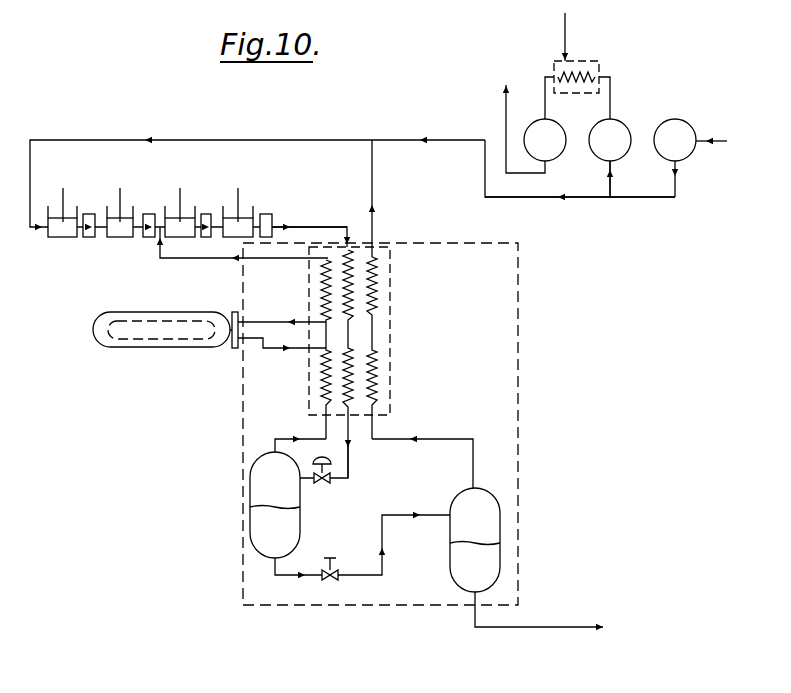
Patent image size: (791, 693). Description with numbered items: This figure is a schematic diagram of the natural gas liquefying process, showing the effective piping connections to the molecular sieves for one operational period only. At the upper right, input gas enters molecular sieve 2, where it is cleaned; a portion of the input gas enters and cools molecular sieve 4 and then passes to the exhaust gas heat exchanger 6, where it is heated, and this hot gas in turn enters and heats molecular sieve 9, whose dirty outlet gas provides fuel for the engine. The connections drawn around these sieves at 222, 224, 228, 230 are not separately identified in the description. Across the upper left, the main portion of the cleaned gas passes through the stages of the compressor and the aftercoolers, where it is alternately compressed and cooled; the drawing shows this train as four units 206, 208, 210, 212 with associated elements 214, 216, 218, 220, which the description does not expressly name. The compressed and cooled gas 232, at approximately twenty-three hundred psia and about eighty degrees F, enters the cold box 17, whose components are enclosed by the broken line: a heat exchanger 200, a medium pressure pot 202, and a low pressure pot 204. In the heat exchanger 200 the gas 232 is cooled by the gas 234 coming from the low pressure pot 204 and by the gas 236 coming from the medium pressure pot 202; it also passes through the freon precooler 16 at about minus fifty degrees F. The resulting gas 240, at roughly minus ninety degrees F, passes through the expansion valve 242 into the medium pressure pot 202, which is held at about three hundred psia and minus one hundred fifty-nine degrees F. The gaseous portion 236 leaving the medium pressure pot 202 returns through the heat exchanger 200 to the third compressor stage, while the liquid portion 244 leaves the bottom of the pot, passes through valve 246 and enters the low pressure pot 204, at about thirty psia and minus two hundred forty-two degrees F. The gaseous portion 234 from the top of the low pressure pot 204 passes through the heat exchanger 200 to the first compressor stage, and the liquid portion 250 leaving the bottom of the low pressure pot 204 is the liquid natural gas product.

The molecular sieve 2 is at (667, 130).
The molecular sieve 4 is at (617, 127).
The exhaust gas heat exchanger 6 is at (590, 60).
The molecular sieve 9 is at (555, 132).
The freon precooler 16 is at (153, 342).
The cold box 17 is at (490, 380).
The heat exchanger 200 is at (385, 303).
The medium pressure pot 202 is at (252, 494).
The low pressure pot 204 is at (493, 528).
The adsorber unit 206 is at (68, 218).
The adsorber unit 208 is at (127, 218).
The adsorber unit 210 is at (185, 220).
The adsorber unit 212 is at (243, 220).
The valve 214 is at (88, 235).
The valve 216 is at (147, 237).
The valve 218 is at (206, 237).
The valve 220 is at (267, 217).
The feed gas inlet line 222 is at (720, 136).
The interstage line 224 is at (615, 192).
The outlet line 228 is at (503, 120).
The return line 230 is at (540, 198).
The compressed and cooled gas 232 is at (321, 210).
The gaseous portion 234 is at (433, 438).
The gaseous portion 236 is at (293, 437).
The gas 240 is at (352, 462).
The expansion valve 242 is at (327, 483).
The liquid portion 244 is at (298, 578).
The valve 246 is at (333, 586).
The liquid portion 250 is at (550, 627).